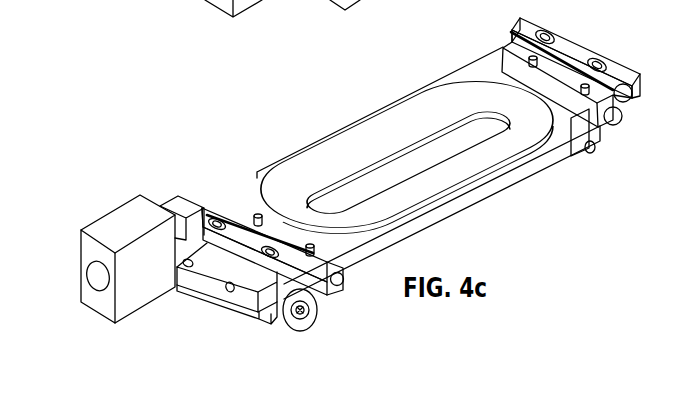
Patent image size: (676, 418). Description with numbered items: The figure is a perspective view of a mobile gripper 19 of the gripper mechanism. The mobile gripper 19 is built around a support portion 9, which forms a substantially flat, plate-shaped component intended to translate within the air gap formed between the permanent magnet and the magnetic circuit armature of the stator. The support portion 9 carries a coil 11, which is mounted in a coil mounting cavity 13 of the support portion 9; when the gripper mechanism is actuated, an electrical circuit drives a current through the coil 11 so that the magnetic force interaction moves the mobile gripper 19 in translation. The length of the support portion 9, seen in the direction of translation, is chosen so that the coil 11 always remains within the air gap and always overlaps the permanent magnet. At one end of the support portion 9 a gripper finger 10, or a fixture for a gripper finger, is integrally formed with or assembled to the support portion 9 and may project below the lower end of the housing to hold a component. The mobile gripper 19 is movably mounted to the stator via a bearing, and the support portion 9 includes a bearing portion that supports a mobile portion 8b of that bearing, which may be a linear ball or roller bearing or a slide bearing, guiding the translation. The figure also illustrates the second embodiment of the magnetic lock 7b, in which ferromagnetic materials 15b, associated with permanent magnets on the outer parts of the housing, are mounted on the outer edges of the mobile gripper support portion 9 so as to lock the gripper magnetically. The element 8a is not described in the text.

The magnetic lock 7b is at (400, 0).
The clamp body 8a is at (273, 225).
The mobile portion of the bearing 8b is at (243, 237).
The support portion 9 is at (450, 205).
The gripper finger 10 is at (143, 278).
The coil 11 is at (482, 152).
The coil mounting cavity 13 is at (450, 133).
The ferromagnetic materials 15b is at (313, 308).
The mobile gripper 19 is at (262, 130).